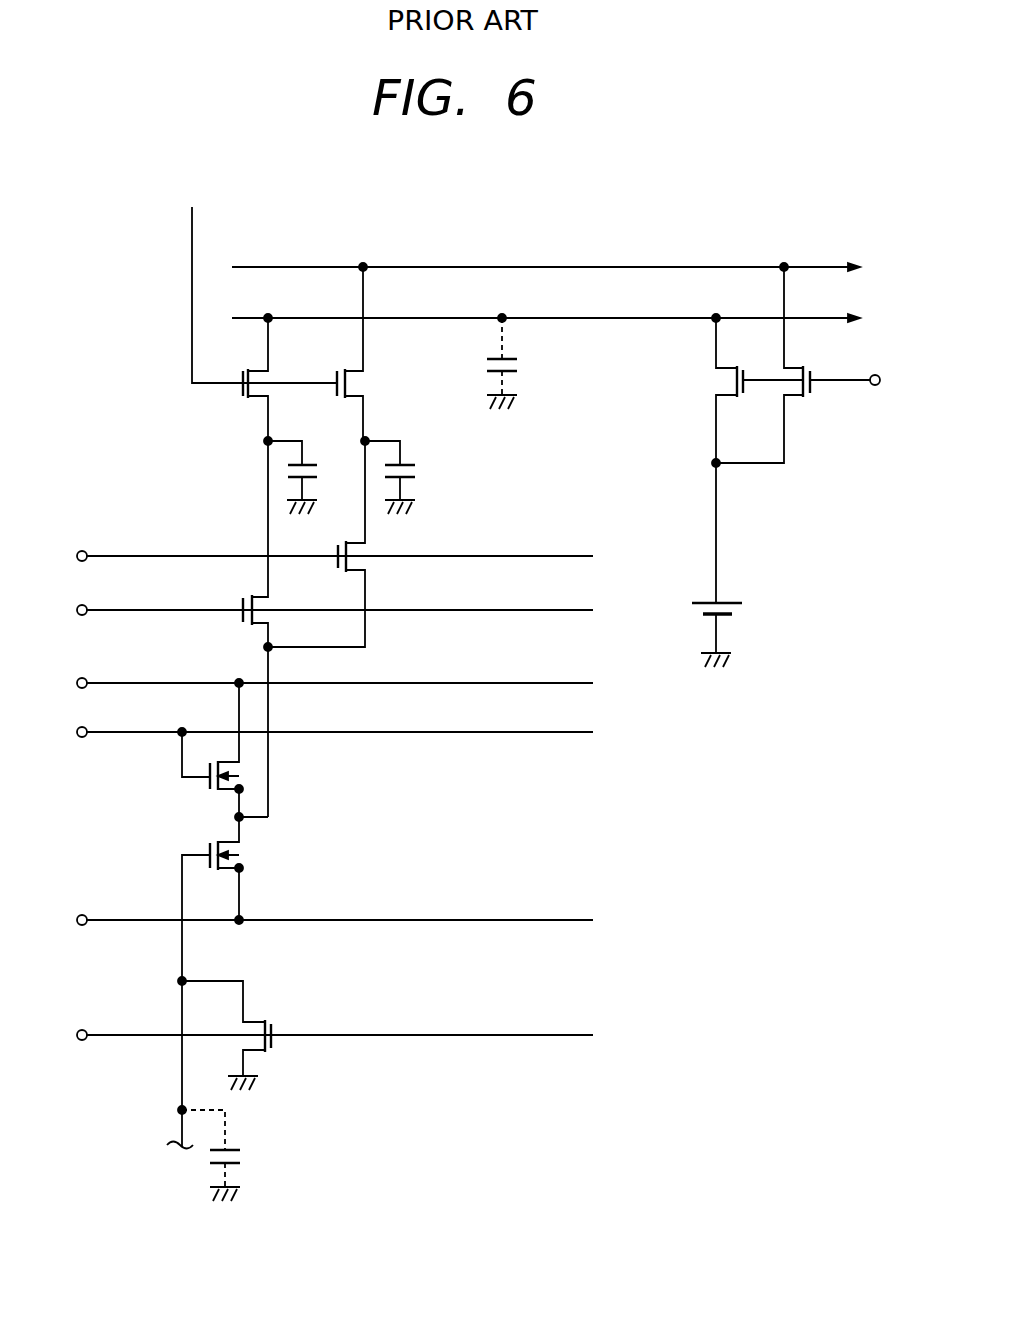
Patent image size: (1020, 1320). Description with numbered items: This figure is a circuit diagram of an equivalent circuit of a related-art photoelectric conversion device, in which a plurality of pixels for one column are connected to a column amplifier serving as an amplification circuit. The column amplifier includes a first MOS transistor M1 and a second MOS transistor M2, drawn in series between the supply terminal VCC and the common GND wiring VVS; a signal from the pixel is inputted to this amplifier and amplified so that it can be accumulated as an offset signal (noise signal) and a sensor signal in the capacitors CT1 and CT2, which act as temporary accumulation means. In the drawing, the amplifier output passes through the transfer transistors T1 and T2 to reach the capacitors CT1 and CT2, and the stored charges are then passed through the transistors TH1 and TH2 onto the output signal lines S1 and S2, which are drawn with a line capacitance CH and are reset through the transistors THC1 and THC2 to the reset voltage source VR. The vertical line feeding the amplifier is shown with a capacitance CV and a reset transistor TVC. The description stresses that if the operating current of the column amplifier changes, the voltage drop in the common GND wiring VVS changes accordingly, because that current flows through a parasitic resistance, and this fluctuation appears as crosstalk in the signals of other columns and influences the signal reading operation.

The horizontal transfer transistor TH1 is at (282, 379).
The horizontal transfer transistor TH2 is at (378, 354).
The horizontal line capacitance CH is at (525, 363).
The horizontal reset transistor THC1 is at (723, 392).
The horizontal reset transistor THC2 is at (798, 365).
The capacitor CT1 is at (308, 474).
The capacitor CT2 is at (409, 474).
The transfer transistor T1 is at (248, 629).
The transfer transistor T2 is at (335, 544).
The reset voltage source VR is at (741, 565).
The first MOS transistor M1 is at (212, 982).
The second MOS transistor M2 is at (225, 753).
The vertical line reset transistor TVC is at (253, 1033).
The vertical line capacitance CV is at (226, 1153).
The output signal line S1 is at (564, 266).
The output signal line S2 is at (565, 319).
The supply voltage terminal VCC is at (303, 684).
The common GND wiring voltage drop VVS is at (304, 921).